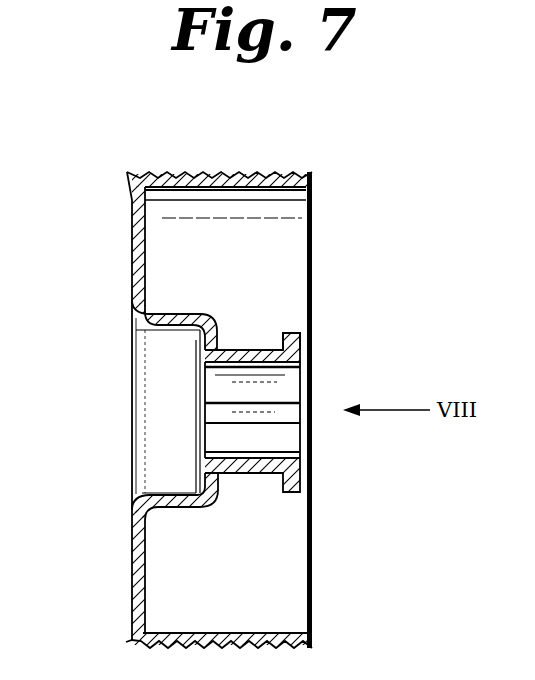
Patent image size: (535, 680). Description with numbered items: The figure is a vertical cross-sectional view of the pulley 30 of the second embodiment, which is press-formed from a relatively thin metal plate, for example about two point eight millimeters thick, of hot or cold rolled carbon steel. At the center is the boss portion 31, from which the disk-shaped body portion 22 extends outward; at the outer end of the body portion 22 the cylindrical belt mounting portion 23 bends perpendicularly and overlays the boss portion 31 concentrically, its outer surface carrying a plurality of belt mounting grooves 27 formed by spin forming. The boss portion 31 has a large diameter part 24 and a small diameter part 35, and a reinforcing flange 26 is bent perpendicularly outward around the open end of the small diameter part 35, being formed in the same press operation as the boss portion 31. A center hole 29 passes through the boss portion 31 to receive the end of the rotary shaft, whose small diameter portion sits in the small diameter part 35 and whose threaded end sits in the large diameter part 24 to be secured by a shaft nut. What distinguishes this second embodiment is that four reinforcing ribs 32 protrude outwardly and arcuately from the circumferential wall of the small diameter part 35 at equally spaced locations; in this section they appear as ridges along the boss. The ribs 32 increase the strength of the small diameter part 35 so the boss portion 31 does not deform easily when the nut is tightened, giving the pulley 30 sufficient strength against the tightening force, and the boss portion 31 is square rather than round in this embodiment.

The body portion 22 is at (132, 246).
The belt mounting portion 23 is at (205, 172).
The large diameter part 24 is at (170, 314).
The reinforcing flange 26 is at (292, 344).
The belt mounting grooves 27 is at (285, 172).
The center hole 29 is at (288, 438).
The pulley 30 is at (327, 204).
The boss portion 31 is at (229, 350).
The reinforcing ribs 32 is at (294, 367).
The small diameter part 35 is at (268, 350).